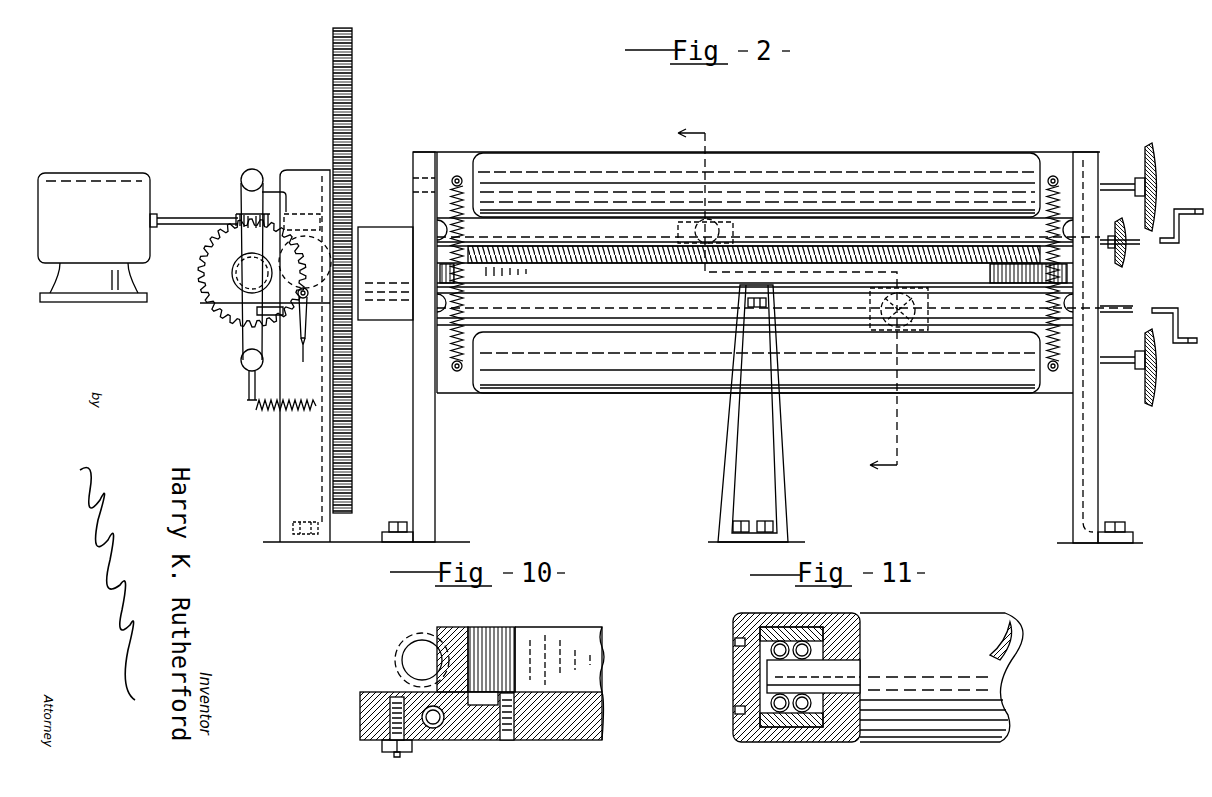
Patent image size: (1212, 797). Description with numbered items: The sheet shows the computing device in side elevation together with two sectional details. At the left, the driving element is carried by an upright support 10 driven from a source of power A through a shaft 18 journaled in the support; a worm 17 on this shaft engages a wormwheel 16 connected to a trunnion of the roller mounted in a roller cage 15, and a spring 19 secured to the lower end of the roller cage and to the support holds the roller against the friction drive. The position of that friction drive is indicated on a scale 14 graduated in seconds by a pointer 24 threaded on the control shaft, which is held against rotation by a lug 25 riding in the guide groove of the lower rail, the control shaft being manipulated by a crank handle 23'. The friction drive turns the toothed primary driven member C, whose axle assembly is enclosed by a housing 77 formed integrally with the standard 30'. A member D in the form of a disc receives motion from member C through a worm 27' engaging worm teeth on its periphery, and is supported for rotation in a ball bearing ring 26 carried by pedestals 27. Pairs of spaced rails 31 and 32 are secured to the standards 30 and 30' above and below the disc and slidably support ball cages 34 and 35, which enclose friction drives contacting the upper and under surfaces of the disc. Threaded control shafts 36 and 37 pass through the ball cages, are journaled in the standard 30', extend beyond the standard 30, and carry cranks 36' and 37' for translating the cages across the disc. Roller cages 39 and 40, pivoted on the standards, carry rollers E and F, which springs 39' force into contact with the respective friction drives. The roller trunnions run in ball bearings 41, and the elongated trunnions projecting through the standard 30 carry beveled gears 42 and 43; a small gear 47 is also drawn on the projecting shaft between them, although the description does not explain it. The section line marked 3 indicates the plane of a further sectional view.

In FIG. 2, the source of power A is at (90, 173).
In FIG. 2, the shaft 18 is at (194, 210).
In FIG. 2, the worm 17 is at (243, 213).
In FIG. 2, the wormwheel 16 is at (218, 276).
In FIG. 2, the pointer 24 is at (252, 307).
In FIG. 2, the scale 14 is at (260, 312).
In FIG. 2, the roller cage 15 is at (245, 338).
In FIG. 2, the spring 19 is at (270, 416).
In FIG. 2, the lug 25 is at (310, 300).
In FIG. 2, the crank handle 23' is at (304, 360).
In FIG. 2, the upright support 10 is at (288, 479).
In FIG. 2, the primary driven member C is at (360, 121).
In FIG. 2, the housing 77 is at (385, 239).
In FIG. 2, the standard 30' is at (367, 347).
In FIG. 2, the roller cage 39 is at (756, 170).
In FIG. 11, the roller cage 39 is at (796, 691).
In FIG. 2, the spaced rails 31 is at (768, 230).
In FIG. 2, the ball bearing ring 26 is at (755, 264).
In FIG. 10, the ball bearing ring 26 is at (360, 704).
In FIG. 2, the ball cage 34 is at (733, 241).
In FIG. 2, the spaced rails 32 is at (702, 319).
In FIG. 2, the ball cage 35 is at (870, 324).
In FIG. 2, the roller cage 40 is at (656, 371).
In FIG. 2, the springs 39' is at (787, 273).
In FIG. 2, the pedestals 27 is at (760, 413).
In FIG. 10, the worm 27' is at (399, 658).
In FIG. 2, the standard 30 is at (1087, 347).
In FIG. 2, the beveled gear 42 is at (1146, 160).
In FIG. 2, the bevel pinion 47 is at (1126, 250).
In FIG. 2, the beveled gear 43 is at (1150, 398).
In FIG. 2, the threaded control shaft 36 is at (1179, 239).
In FIG. 2, the crank 36' is at (1187, 197).
In FIG. 2, the threaded control shaft 37 is at (1174, 313).
In FIG. 2, the crank 37' is at (1179, 351).
In FIG. 2, the section line 3- 3 is at (795, 295).
In FIG. 2, the roller E is at (771, 156).
In FIG. 11, the roller E is at (938, 624).
In FIG. 2, the roller F is at (975, 398).
In FIG. 10, the member D is at (512, 637).
In FIG. 11, the ball bearings 41 is at (775, 653).